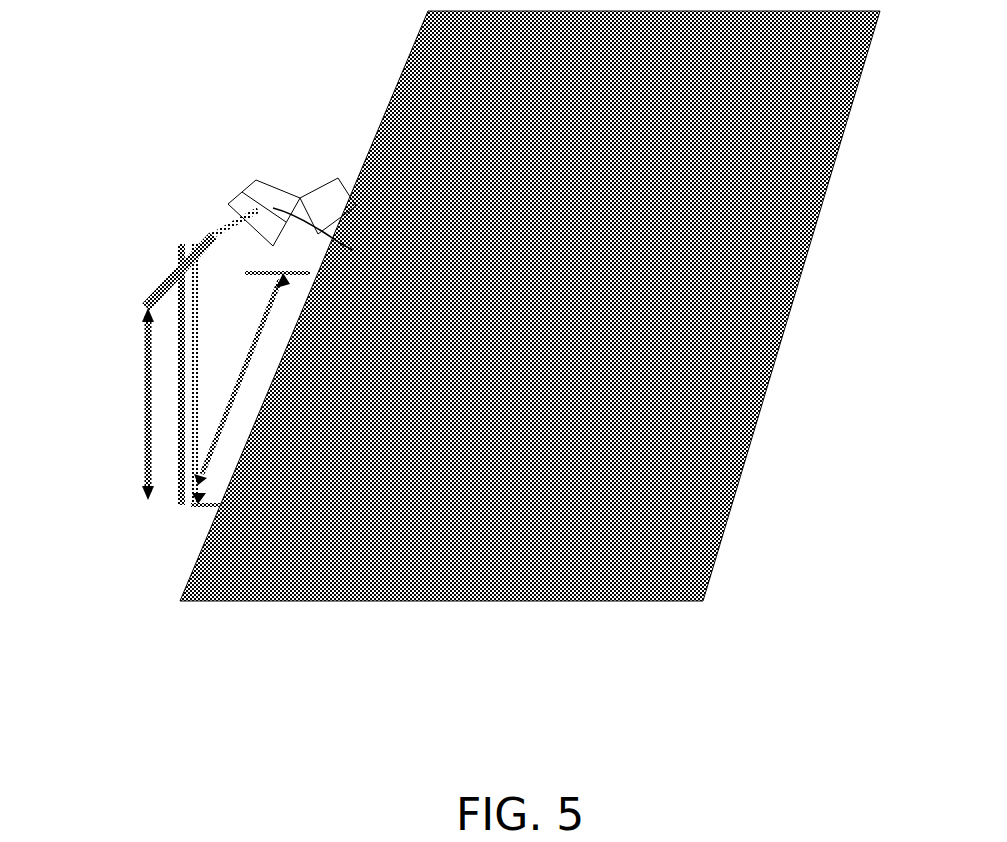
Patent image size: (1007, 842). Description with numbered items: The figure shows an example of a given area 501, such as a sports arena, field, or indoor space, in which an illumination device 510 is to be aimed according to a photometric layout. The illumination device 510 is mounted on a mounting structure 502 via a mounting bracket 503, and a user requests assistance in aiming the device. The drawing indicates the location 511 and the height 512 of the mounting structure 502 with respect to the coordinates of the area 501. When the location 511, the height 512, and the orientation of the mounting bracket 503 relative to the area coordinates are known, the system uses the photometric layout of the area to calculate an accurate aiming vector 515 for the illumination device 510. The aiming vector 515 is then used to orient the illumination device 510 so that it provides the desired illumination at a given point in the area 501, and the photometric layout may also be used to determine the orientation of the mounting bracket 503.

The area 501 is at (831, 169).
The mounting structure 502 is at (172, 400).
The mounting bracket 503 is at (162, 259).
The illumination device 510 is at (268, 200).
The location 511 is at (247, 353).
The height 512 is at (140, 360).
The aiming vector 515 is at (770, 333).